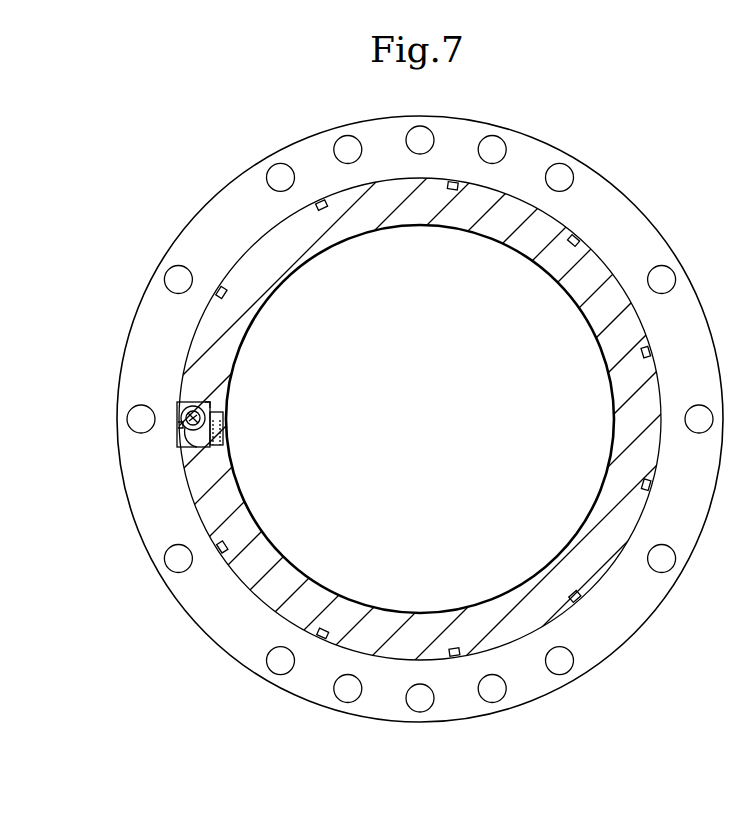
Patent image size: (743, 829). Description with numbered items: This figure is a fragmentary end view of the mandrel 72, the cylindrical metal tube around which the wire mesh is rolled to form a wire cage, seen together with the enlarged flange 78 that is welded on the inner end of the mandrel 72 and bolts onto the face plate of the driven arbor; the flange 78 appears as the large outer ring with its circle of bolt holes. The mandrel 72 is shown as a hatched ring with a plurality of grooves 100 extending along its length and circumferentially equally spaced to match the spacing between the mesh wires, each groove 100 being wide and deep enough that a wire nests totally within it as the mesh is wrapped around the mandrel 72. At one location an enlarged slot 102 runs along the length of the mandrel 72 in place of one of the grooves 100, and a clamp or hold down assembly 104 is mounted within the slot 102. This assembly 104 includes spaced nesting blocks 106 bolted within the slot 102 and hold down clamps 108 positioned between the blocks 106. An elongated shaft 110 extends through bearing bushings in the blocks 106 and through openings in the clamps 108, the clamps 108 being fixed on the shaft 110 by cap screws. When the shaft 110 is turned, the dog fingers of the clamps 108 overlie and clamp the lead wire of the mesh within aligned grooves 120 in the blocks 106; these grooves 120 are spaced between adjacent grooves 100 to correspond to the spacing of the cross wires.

The enlarged flange 78 is at (615, 234).
The mandrel 72 is at (602, 334).
The grooves 100 is at (321, 197).
The clamp or hold down assembly 104 is at (175, 419).
The nesting blocks 106 is at (181, 411).
The aligned grooves 120 is at (178, 415).
The elongated shaft 110 is at (211, 405).
The enlarged slot 102 is at (213, 443).
The hold down clamps 108 is at (188, 440).